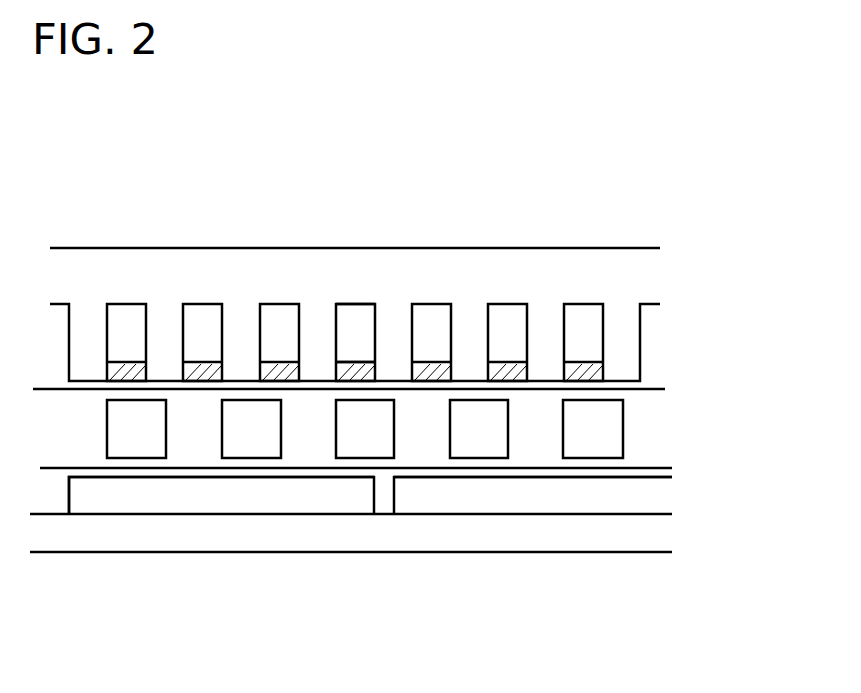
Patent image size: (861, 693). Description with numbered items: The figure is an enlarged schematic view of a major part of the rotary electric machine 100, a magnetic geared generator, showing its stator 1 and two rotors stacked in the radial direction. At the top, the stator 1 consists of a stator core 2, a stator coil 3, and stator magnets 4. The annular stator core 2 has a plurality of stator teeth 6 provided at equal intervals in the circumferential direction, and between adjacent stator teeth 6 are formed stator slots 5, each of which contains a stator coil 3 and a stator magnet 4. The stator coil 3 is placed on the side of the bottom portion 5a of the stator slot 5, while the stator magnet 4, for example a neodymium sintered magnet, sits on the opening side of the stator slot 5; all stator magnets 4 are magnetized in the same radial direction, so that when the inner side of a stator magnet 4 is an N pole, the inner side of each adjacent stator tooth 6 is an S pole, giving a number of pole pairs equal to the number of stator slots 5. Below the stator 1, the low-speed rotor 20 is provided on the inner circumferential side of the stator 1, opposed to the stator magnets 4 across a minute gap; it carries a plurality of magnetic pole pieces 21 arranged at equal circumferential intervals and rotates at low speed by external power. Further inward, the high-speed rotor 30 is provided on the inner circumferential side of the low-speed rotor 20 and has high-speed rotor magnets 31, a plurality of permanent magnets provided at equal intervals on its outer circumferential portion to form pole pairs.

The rotary electric machine 100 is at (552, 166).
The stator 1 is at (655, 273).
The stator core 2 is at (123, 273).
The stator coil 3 is at (203, 323).
The stator magnet 4 is at (193, 364).
The stator slot 5 is at (358, 305).
The bottom portion 5a is at (337, 307).
The stator tooth 6 is at (313, 368).
The low-speed rotor 20 is at (655, 423).
The magnetic pole piece 21 is at (477, 433).
The high-speed rotor 30 is at (665, 525).
The high-speed rotor magnet 31 is at (287, 495).